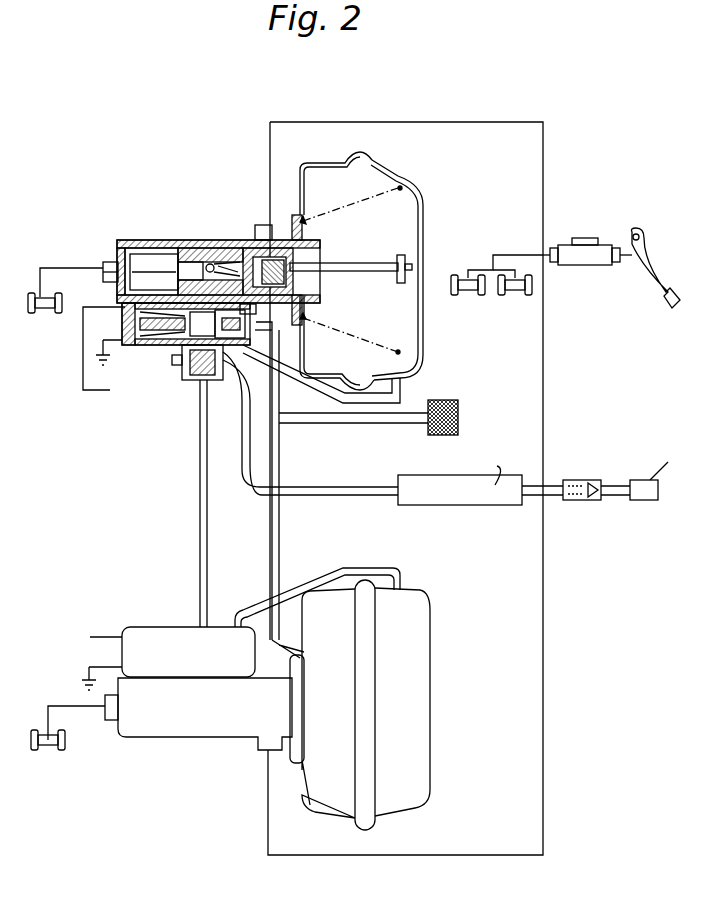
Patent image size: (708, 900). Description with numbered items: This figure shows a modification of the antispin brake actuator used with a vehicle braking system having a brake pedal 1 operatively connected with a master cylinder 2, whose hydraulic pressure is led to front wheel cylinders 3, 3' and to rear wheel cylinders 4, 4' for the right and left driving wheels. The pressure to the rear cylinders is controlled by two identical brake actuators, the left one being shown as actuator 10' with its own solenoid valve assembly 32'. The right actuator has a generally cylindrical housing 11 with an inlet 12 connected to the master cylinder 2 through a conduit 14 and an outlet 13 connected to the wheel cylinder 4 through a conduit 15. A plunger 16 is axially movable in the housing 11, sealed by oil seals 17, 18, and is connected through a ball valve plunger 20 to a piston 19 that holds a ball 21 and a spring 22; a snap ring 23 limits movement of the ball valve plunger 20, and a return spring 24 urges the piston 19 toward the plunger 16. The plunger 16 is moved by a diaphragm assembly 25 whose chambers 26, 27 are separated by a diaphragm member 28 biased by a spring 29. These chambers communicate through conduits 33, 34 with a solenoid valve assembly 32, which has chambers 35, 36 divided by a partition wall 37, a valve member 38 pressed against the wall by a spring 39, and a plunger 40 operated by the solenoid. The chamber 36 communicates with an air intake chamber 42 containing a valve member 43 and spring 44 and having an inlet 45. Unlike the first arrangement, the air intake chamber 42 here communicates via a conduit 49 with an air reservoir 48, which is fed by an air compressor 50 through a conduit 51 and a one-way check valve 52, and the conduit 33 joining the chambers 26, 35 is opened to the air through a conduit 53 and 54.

The brake pedal 1 is at (648, 270).
The master cylinder 2 is at (582, 238).
The front wheel cylinder 3 is at (497, 294).
The front wheel cylinder 3' is at (512, 302).
The rear wheel cylinder 4 is at (45, 323).
The rear wheel cylinder 4' is at (48, 783).
The brake actuator 10' is at (170, 739).
The housing 11 is at (121, 250).
The inlet 12 is at (265, 226).
The outlet 13 is at (102, 264).
The conduit 14 is at (515, 122).
The conduit 15 is at (40, 265).
The plunger 16 is at (354, 274).
The oil seal 17 is at (322, 263).
The oil seal 18 is at (318, 246).
The piston 19 is at (216, 250).
The ball valve plunger 20 is at (220, 262).
The ball 21 is at (206, 268).
The spring 22 is at (182, 262).
The snap ring 23 is at (251, 250).
The return spring 24 is at (142, 252).
The diaphragm assembly 25 is at (386, 259).
The chamber 26 is at (332, 170).
The chamber 27 is at (418, 180).
The diaphragm member 28 is at (415, 312).
The spring 29 is at (402, 191).
The solenoid valve assembly 32 is at (185, 353).
The solenoid valve assembly 32' is at (168, 632).
The conduit 33 is at (277, 347).
The conduit 34 is at (322, 403).
The chamber 35 is at (256, 318).
The chamber 36 is at (175, 340).
The partition wall 37 is at (104, 348).
The valve member 38 is at (246, 372).
The spring 39 is at (284, 368).
The plunger 40 is at (122, 355).
The air intake chamber 42 is at (203, 398).
The valve member 43 is at (213, 382).
The spring 44 is at (198, 365).
The inlet 45 is at (216, 422).
The air reservoir 48 is at (449, 506).
The conduit 49 is at (260, 497).
The air compressor 50 is at (643, 500).
The conduit 51 is at (532, 505).
The one-way check valve 52 is at (581, 502).
The conduit 53 is at (355, 426).
The conduit 54 is at (460, 420).